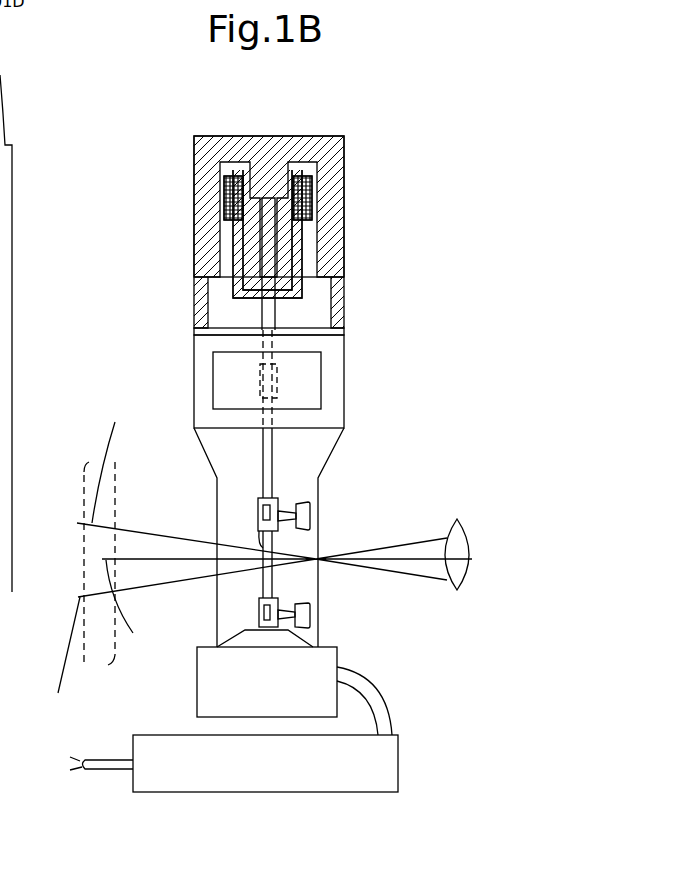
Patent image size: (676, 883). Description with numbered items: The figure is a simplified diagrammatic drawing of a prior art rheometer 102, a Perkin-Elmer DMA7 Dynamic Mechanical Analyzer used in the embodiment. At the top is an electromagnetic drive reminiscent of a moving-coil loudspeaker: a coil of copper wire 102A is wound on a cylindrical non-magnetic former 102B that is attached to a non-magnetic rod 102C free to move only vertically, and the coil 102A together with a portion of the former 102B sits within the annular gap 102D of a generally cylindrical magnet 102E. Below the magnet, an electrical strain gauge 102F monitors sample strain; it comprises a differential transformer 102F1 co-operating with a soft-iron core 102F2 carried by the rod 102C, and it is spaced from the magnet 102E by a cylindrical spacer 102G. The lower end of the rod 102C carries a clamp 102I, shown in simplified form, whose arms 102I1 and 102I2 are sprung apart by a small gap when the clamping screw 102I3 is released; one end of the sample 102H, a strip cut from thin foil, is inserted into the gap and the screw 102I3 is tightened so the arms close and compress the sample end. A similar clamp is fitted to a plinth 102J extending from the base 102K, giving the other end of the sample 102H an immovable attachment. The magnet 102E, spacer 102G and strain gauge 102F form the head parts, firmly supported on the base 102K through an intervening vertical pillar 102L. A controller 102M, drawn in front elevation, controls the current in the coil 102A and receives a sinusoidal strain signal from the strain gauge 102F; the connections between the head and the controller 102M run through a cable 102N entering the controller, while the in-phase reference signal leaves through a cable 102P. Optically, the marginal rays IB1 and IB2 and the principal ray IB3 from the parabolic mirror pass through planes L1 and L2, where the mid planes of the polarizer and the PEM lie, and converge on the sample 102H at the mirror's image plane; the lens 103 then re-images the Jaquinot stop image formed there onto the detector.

The rheometer 102 is at (238, 134).
The coil of copper wire 102A is at (305, 195).
The cylindrical non-magnetic former 102B is at (300, 258).
The non-magnetic rod 102C is at (276, 320).
The annular gap 102D is at (223, 243).
The cylindrical magnet 102E is at (196, 178).
The electrical strain gauge 102F is at (186, 370).
The differential transformer 102F1 is at (338, 370).
The soft-iron core 102F2 is at (278, 384).
The cylindrical spacer 102G is at (197, 303).
The sample 102H is at (262, 593).
The clamp 102I is at (247, 517).
The clamp arm 102I1 is at (283, 504).
The clamp arm 102I2 is at (292, 545).
The clamping screw 102I3 is at (292, 512).
The plinth 102J is at (311, 641).
The base 102K is at (198, 689).
The vertical pillar 102L is at (222, 451).
The controller 102M is at (356, 795).
The cable 102N is at (385, 712).
The cable 102P is at (112, 772).
The lens 103 is at (444, 600).
The plane L1 is at (96, 527).
The plane L2 is at (102, 582).
The marginal ray IB1 is at (122, 467).
The marginal ray IB2 is at (54, 661).
The principal ray IB3 is at (131, 614).